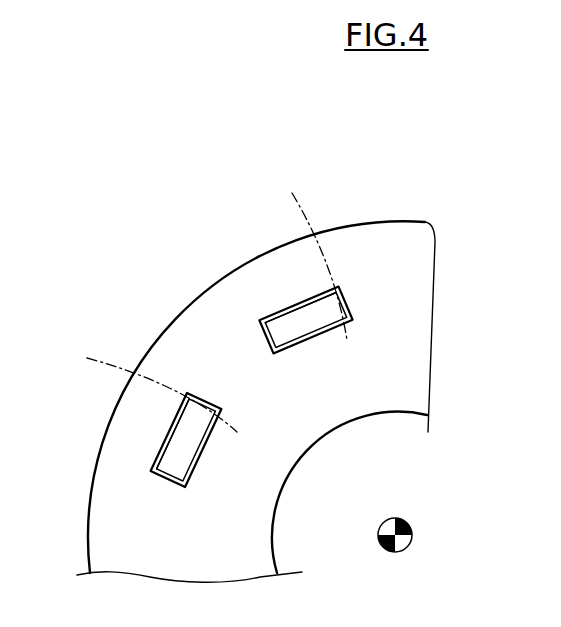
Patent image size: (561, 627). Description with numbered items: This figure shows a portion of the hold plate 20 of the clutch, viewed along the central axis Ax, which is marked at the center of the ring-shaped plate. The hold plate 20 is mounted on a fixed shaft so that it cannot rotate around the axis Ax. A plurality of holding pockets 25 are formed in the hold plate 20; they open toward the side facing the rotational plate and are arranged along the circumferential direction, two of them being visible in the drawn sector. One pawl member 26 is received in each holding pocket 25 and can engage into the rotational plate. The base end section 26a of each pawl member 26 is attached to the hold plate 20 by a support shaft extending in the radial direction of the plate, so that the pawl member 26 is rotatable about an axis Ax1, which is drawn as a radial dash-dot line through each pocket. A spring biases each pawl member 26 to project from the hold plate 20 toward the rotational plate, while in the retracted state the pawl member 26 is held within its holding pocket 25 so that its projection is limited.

The hold plate 20 is at (167, 331).
The holding pocket 25 is at (260, 317).
The pawl member 26 is at (303, 325).
The base end section 26a is at (348, 300).
The axis Ax is at (408, 523).
The axis Ax1 is at (190, 297).